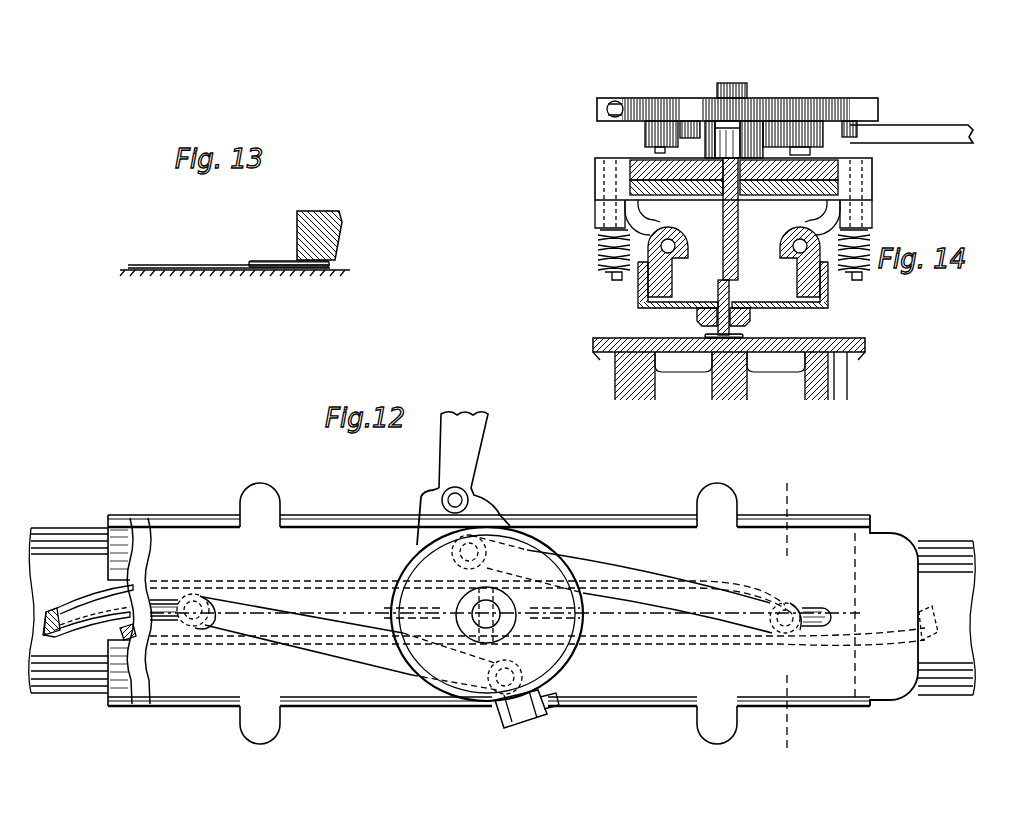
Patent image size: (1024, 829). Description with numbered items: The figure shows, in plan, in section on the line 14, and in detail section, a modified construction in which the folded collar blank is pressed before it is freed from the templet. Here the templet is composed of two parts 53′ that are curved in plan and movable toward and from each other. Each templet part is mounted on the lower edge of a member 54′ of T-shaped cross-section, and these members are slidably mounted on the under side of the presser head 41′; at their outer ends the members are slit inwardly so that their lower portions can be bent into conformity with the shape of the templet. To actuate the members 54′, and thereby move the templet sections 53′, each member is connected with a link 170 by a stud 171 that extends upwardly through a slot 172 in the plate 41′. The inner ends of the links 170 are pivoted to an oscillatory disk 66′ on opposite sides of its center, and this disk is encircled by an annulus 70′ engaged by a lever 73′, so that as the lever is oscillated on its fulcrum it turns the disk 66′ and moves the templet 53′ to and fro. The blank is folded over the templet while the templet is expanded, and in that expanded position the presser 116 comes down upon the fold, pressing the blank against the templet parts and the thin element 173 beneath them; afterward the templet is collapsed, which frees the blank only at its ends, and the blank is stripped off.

In FIG. 12, the section line 14 is at (787, 620).
In FIG. 14, the presser head 41′ is at (838, 166).
In FIG. 12, the presser head 41′ is at (664, 702).
In FIG. 13, the templet parts 53′ is at (270, 261).
In FIG. 14, the templet parts 53′ is at (745, 337).
In FIG. 12, the templet parts 53′ is at (82, 612).
In FIG. 14, the members of T-shaped cross-section 54′ is at (723, 212).
In FIG. 12, the members of T-shaped cross-section 54′ is at (318, 600).
In FIG. 12, the oscillatory disk 66′ is at (560, 655).
In FIG. 14, the annulus 70′ is at (682, 100).
In FIG. 12, the annulus 70′ is at (398, 569).
In FIG. 14, the lever 73′ is at (932, 125).
In FIG. 12, the lever 73′ is at (482, 438).
In FIG. 13, the presser 116 is at (342, 228).
In FIG. 14, the presser 116 is at (697, 317).
In FIG. 14, the links 170 is at (692, 121).
In FIG. 12, the links 170 is at (587, 560).
In FIG. 14, the studs 171 is at (742, 166).
In FIG. 12, the studs 171 is at (190, 596).
In FIG. 12, the slots 172 is at (155, 600).
In FIG. 13, the thin plate 173 is at (203, 263).